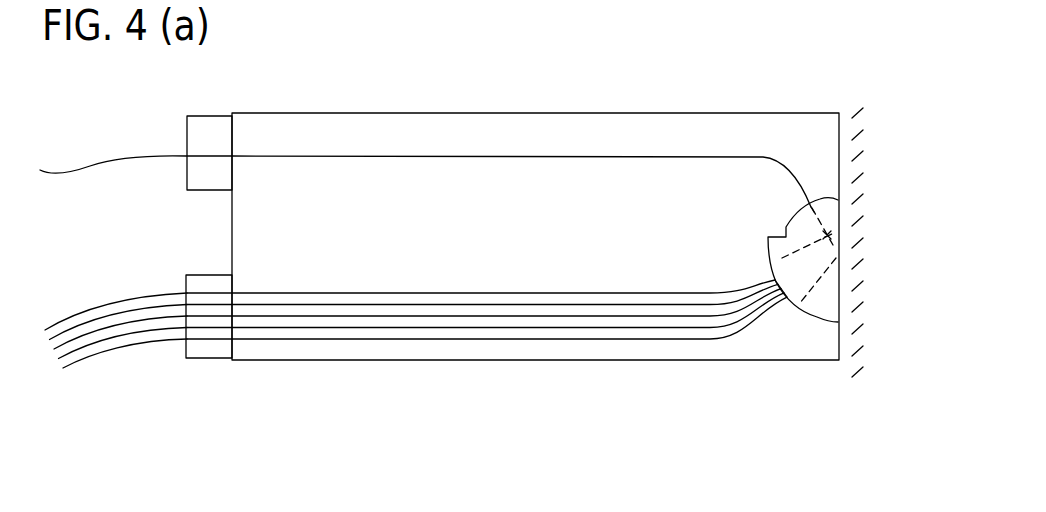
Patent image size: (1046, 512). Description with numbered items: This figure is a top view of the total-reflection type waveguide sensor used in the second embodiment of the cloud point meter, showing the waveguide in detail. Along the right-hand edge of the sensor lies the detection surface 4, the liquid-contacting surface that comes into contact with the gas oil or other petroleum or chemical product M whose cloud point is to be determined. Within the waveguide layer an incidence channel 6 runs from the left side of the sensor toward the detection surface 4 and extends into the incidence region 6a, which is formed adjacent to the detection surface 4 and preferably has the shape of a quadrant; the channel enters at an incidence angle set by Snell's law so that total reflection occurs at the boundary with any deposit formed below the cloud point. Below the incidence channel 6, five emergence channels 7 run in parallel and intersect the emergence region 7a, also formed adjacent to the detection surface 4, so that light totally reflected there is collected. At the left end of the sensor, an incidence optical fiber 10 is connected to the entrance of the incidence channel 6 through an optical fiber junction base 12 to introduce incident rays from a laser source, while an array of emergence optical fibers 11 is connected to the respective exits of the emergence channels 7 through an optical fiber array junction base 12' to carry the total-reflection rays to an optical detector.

The detection surface 4 is at (839, 148).
The incidence channel 6 is at (483, 157).
The incidence region 6a is at (835, 211).
The emergence channels 7 is at (507, 318).
The emergence region 7a is at (829, 300).
The incidence optical fiber 10 is at (90, 164).
The emergence optical fibers 11 is at (77, 330).
The optical fiber junction base 12 is at (209, 127).
The optical fiber array junction base 12' is at (213, 356).
The petroleum or chemical product M is at (868, 339).